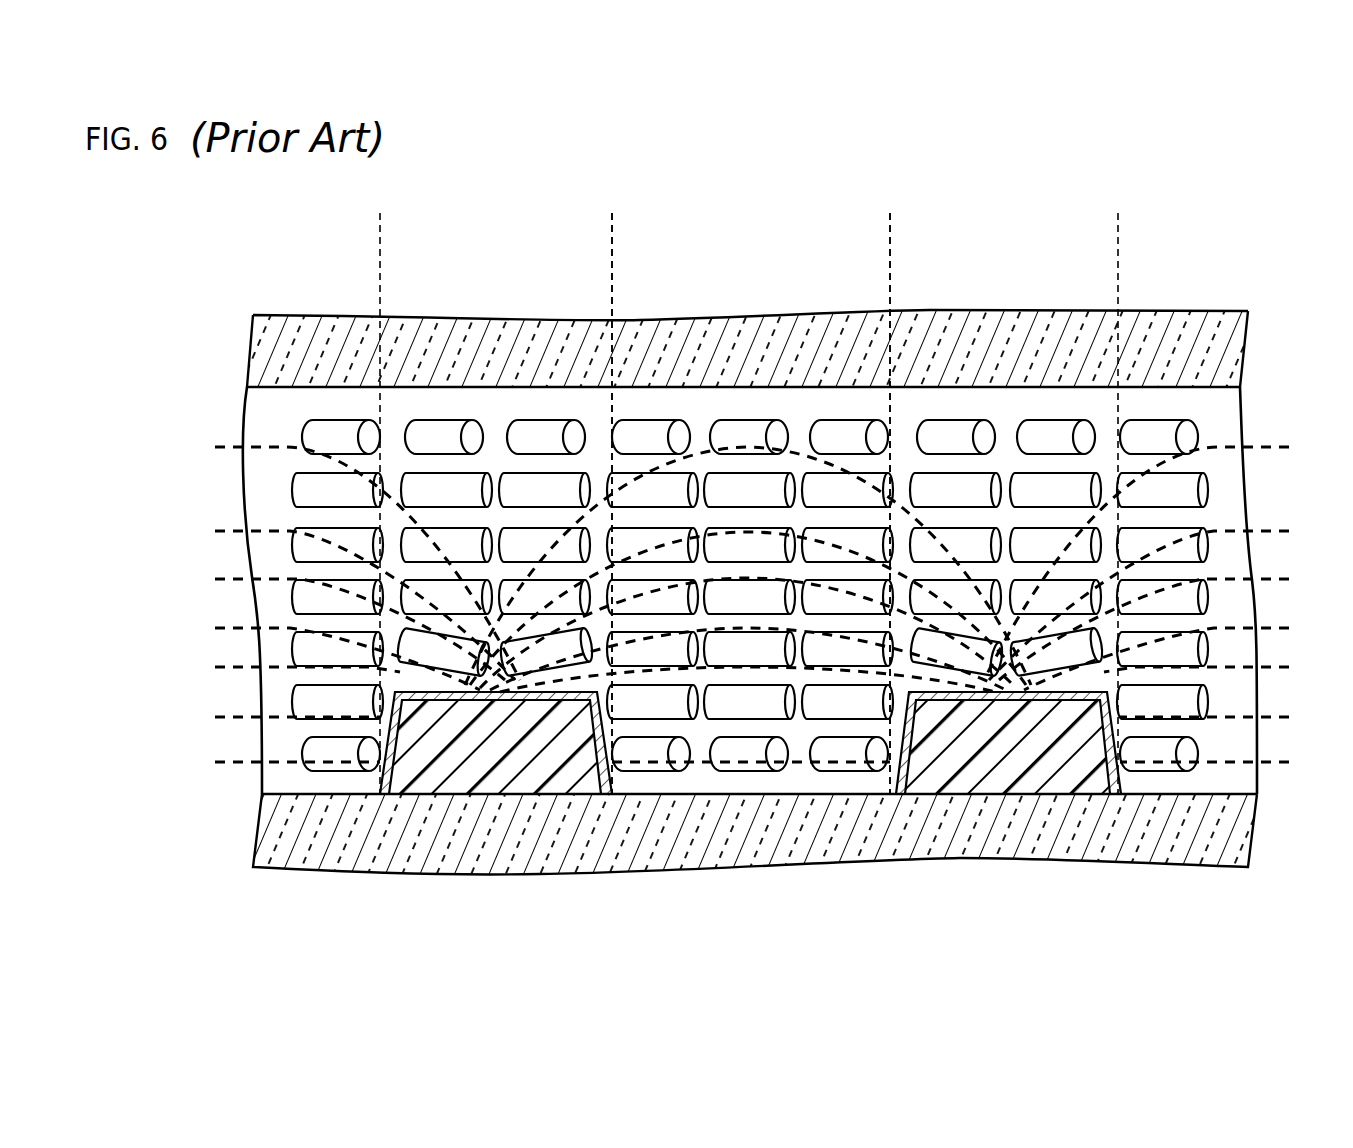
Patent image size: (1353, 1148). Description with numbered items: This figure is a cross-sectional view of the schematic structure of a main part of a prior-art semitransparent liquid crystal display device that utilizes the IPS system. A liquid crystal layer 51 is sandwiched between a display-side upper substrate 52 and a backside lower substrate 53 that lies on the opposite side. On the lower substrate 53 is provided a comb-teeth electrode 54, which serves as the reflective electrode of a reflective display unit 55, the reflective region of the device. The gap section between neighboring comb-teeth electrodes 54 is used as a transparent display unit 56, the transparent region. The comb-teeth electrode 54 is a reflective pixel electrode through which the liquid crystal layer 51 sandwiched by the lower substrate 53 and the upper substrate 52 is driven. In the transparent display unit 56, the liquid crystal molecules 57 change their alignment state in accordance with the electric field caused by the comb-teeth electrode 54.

The liquid crystal layer 51 is at (1232, 492).
The upper substrate 52 is at (1233, 352).
The lower substrate 53 is at (1247, 826).
The comb-teeth electrode 54 is at (497, 697).
The reflective display unit 55 is at (749, 503).
The transparent display unit 56 is at (751, 503).
The liquid crystal molecule 57 is at (1188, 598).